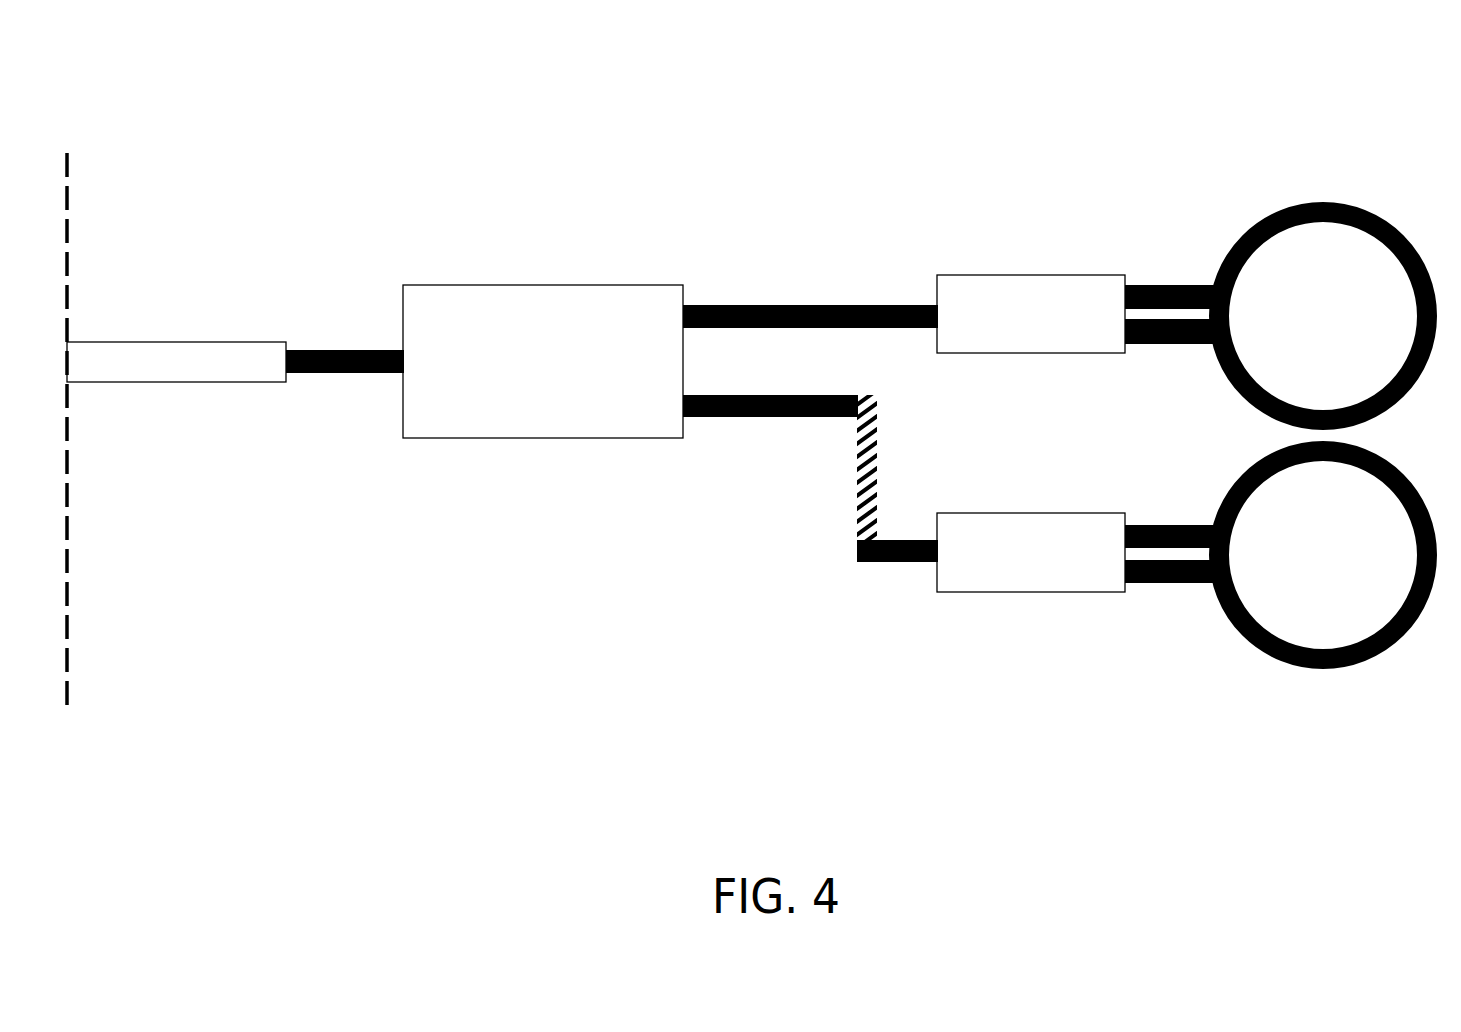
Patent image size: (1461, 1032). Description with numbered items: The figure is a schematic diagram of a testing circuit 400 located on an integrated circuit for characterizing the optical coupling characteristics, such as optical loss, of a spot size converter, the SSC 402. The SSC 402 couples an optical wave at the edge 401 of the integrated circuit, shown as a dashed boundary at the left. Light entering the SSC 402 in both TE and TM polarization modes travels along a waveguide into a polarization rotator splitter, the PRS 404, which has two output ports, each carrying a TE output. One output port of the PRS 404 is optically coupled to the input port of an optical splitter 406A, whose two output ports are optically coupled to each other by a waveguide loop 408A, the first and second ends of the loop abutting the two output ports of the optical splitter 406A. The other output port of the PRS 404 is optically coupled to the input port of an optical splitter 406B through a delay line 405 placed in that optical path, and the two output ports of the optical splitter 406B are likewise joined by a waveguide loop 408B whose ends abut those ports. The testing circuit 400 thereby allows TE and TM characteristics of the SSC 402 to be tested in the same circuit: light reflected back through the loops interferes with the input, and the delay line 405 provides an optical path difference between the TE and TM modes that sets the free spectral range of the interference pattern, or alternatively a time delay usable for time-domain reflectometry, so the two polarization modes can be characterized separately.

The testing circuit 400 is at (813, 99).
The edge 401 is at (67, 168).
The SSC 402 is at (226, 377).
The polarization rotator splitter 404 is at (563, 403).
The delay line 405 is at (857, 487).
The optical splitter 406A is at (1060, 331).
The optical splitter 406B is at (1060, 568).
The waveguide loop 408A is at (1278, 207).
The waveguide loop 408B is at (1260, 650).